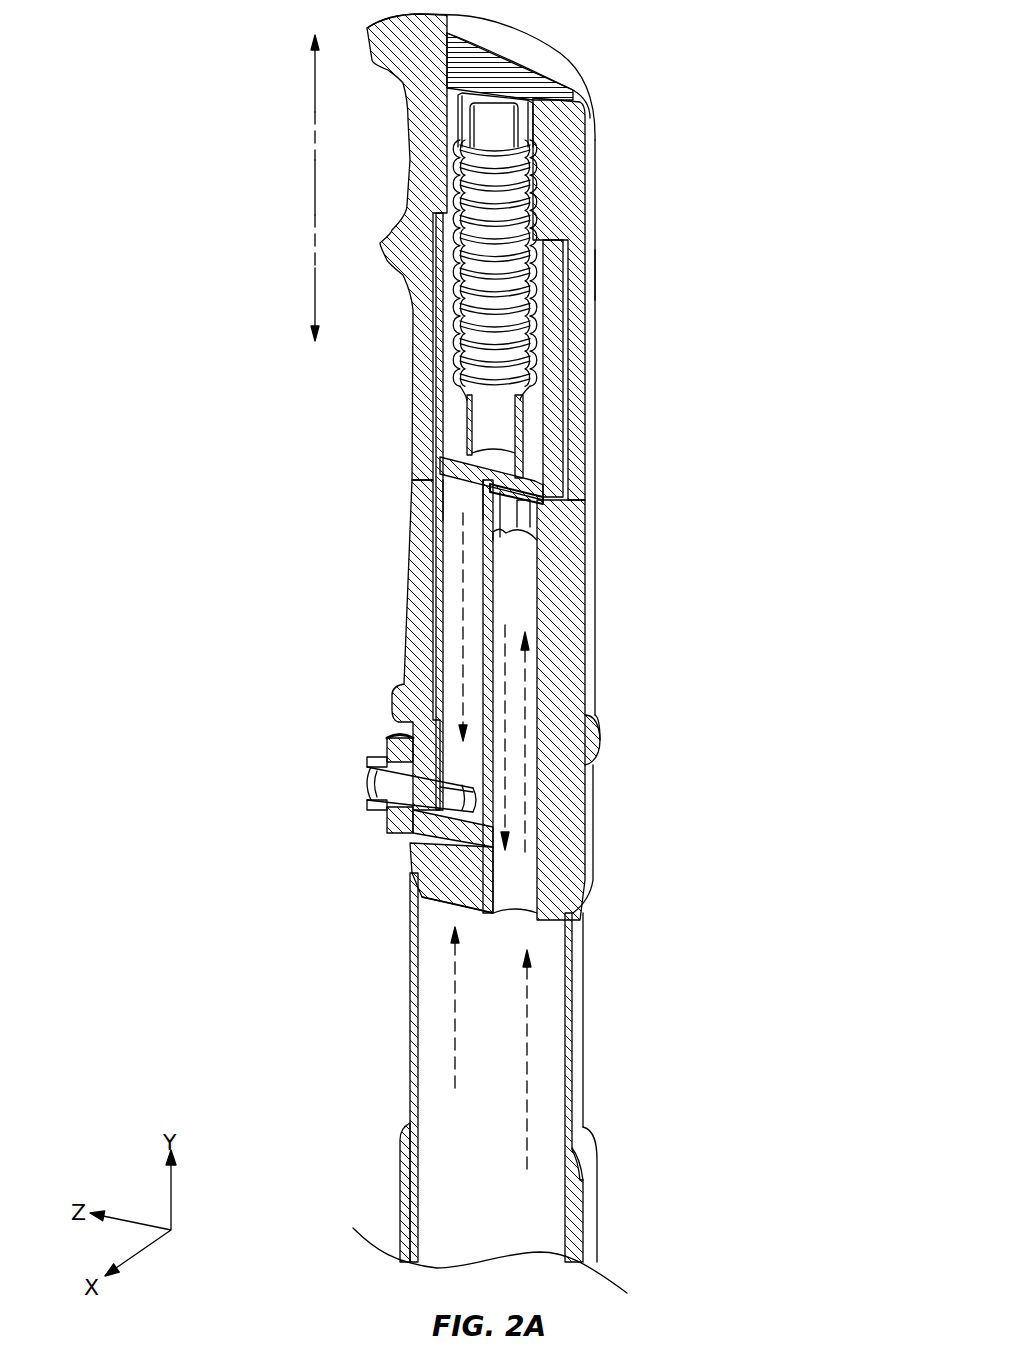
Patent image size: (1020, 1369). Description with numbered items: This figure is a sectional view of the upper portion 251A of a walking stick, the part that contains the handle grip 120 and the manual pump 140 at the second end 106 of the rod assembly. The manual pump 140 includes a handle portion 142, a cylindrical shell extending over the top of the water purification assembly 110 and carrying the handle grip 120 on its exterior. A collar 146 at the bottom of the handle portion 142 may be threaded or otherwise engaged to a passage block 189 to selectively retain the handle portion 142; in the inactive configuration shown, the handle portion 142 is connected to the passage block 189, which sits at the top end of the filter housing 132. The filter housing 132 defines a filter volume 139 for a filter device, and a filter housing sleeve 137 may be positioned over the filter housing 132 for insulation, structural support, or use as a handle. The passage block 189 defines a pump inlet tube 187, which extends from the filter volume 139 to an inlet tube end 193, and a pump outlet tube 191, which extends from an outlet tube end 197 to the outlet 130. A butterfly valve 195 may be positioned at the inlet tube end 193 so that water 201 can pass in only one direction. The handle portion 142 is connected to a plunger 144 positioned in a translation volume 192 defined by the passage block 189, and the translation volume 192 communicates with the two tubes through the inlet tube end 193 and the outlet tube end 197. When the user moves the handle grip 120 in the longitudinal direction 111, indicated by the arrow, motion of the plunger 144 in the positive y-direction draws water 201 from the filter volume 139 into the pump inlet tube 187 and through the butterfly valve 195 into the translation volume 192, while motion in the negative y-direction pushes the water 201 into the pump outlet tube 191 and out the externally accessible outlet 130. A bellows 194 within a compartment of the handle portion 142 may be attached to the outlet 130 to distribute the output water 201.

The second end 106 is at (520, 32).
The upper portion 251A is at (782, 48).
The water purification assembly 110 is at (318, 736).
The longitudinal direction 111 is at (315, 190).
The handle grip 120 is at (565, 200).
The outlet 130 is at (405, 790).
The filter housing 132 is at (580, 996).
The filter housing sleeve 137 is at (592, 1194).
The filter volume 139 is at (552, 1243).
The manual pump 140 is at (680, 280).
The handle portion 142 is at (575, 272).
The plunger 144 is at (550, 472).
The collar 146 is at (595, 732).
The pump inlet tube 187 is at (535, 606).
The passage block 189 is at (567, 826).
The pump outlet tube 191 is at (451, 633).
The translation volume 192 is at (565, 362).
The inlet tube end 193 is at (545, 523).
The bellows 194 is at (528, 142).
The butterfly valve 195 is at (560, 495).
The outlet tube end 197 is at (457, 492).
The water 201 is at (530, 1077).